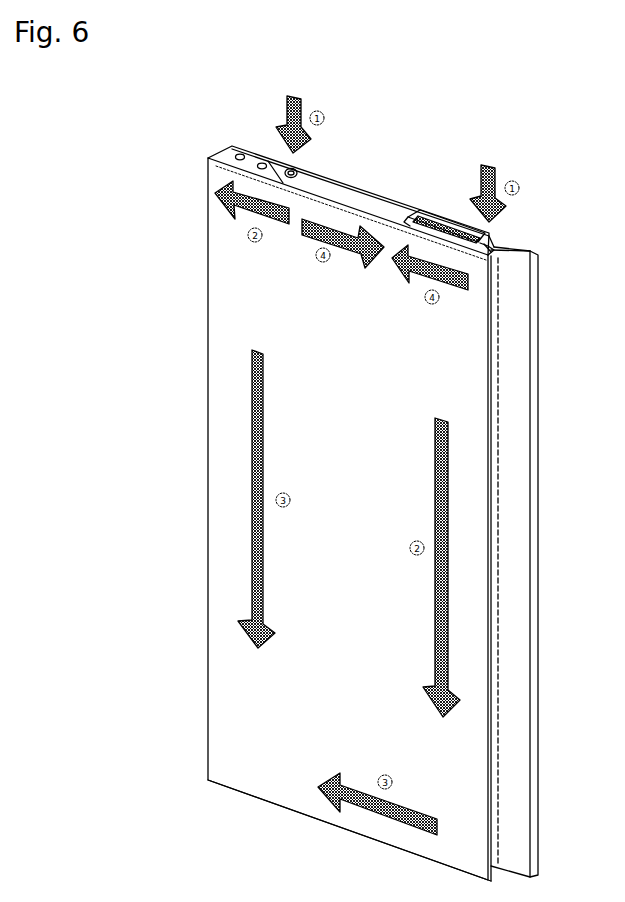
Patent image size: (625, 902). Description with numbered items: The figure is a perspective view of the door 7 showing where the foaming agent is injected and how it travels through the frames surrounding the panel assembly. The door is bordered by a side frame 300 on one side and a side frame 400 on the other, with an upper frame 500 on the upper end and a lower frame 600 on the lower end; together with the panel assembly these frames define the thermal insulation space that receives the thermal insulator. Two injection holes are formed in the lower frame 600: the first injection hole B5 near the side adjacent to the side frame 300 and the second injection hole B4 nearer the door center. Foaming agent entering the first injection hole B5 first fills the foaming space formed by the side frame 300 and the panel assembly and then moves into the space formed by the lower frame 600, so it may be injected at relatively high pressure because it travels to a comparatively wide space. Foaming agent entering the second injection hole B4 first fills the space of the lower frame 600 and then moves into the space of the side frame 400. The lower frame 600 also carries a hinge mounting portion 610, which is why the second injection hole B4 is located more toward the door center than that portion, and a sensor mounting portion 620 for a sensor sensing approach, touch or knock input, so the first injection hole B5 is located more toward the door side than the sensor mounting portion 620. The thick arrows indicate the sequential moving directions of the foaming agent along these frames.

The battery module assembly 7 is at (183, 265).
The side frame 300 is at (526, 392).
The side frame 400 is at (207, 470).
The upper frame 500 is at (348, 833).
The lower frame 600 is at (364, 192).
The hinge mounting portion 610 is at (228, 151).
The sensor mounting portion 620 is at (421, 215).
The second injection hole B4 is at (288, 162).
The first injection hole B5 is at (499, 239).